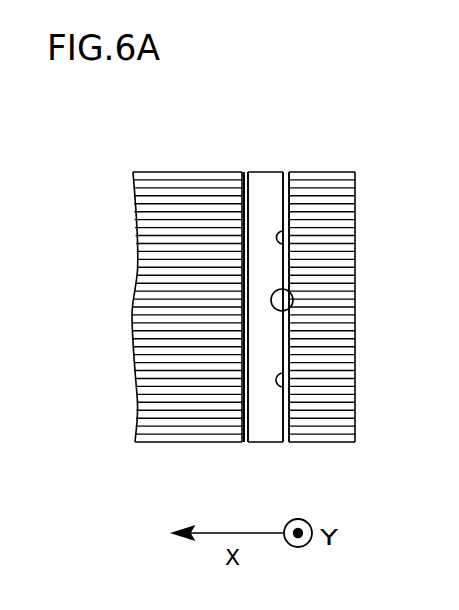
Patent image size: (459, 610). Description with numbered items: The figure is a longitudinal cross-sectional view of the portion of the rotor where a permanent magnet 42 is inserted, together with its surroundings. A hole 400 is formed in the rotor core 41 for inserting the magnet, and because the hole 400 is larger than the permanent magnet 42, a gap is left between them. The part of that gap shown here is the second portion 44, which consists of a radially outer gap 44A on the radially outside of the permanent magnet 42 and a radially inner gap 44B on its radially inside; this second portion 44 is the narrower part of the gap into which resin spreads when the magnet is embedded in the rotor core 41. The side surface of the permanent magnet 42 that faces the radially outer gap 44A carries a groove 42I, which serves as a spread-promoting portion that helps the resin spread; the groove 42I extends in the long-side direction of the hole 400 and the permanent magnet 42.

The rotor core 41 is at (188, 197).
The permanent magnet 42 is at (265, 427).
The groove 42I is at (278, 234).
The second portion 44 is at (320, 123).
The radially outer gap 44A is at (288, 188).
The radially inner gap 44B is at (245, 188).
The hole 400 is at (293, 295).